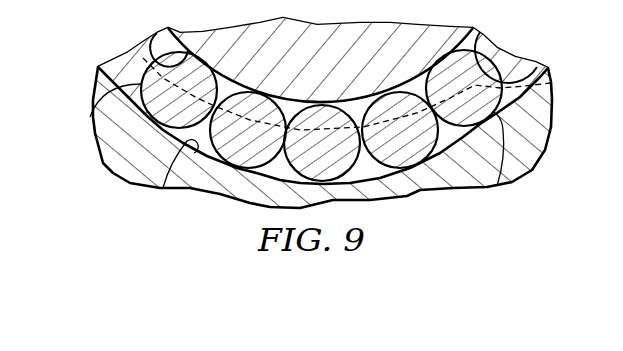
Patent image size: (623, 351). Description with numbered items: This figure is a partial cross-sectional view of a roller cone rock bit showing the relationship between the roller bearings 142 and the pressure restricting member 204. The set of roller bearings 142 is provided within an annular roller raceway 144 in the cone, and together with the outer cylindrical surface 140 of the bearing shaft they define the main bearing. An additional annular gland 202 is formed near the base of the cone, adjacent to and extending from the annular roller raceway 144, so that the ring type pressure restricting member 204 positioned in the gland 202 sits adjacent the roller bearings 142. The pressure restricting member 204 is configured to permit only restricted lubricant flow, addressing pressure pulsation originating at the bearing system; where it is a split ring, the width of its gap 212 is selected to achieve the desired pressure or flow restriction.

The outer cylindrical surface 140 is at (158, 33).
The roller bearings 142 is at (90, 117).
The annular roller raceway 144 is at (161, 188).
The annular gland 202 is at (550, 83).
The pressure restricting member 204 is at (417, 95).
The gap 212 is at (352, 116).